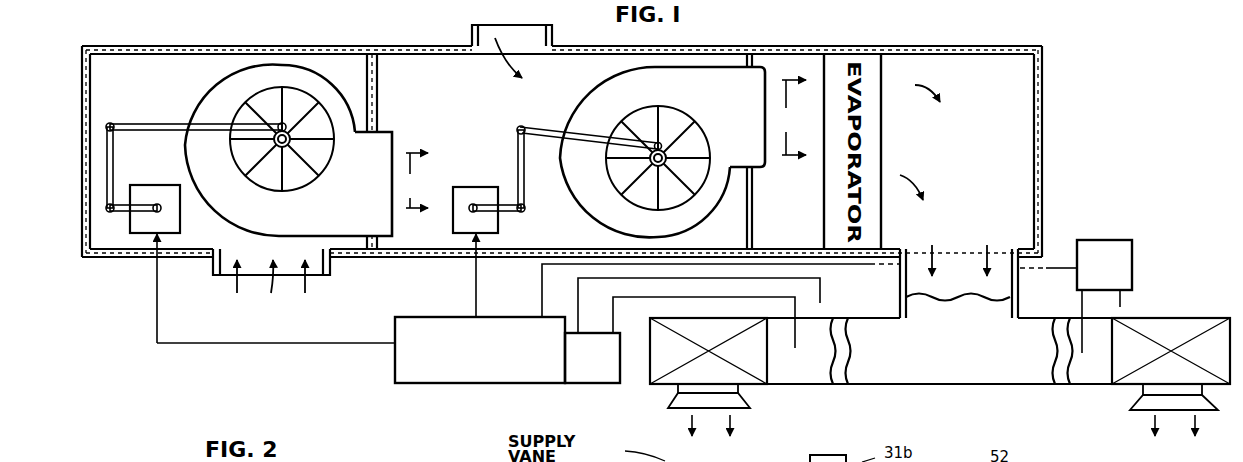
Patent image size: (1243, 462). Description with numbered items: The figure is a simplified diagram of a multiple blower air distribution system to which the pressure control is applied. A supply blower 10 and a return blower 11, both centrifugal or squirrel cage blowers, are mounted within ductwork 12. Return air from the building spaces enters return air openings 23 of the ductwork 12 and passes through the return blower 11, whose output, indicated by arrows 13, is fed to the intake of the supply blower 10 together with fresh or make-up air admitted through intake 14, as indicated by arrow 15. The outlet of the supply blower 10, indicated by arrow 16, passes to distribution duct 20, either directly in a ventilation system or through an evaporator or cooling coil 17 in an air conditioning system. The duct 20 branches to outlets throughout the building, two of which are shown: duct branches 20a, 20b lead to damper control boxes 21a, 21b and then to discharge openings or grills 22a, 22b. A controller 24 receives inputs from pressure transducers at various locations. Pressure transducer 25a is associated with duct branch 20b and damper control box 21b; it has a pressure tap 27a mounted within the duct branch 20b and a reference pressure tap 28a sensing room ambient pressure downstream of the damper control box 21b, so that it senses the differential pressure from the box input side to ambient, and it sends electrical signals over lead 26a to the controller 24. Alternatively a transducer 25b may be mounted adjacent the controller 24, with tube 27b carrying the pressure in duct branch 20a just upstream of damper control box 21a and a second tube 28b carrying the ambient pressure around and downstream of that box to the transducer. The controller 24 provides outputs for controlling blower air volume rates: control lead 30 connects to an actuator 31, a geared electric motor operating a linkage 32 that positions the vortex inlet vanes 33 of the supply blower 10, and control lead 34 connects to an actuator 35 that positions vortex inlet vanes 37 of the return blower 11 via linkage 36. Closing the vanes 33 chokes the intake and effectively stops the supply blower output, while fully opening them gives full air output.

The supply blower 10 is at (590, 88).
The return blower 11 is at (202, 96).
The ductwork 12 is at (721, 46).
The output of return blower 13 is at (414, 180).
The intake 14 is at (535, 28).
The make-up air flow 15 is at (498, 68).
The outlet of supply blower 16 is at (791, 117).
The evaporator or cooling coil 17 is at (870, 131).
The distribution duct 20 is at (1005, 280).
The duct branch 20a is at (833, 386).
The duct branch 20b is at (1048, 386).
The damper control box 21a is at (670, 384).
The damper control box 21b is at (1140, 377).
The discharge opening or grill 22a is at (752, 408).
The discharge opening or grill 22b is at (1146, 413).
The return air openings 23 is at (272, 284).
The controller 24 is at (475, 385).
The pressure transducer 25a is at (1133, 257).
The pressure transducer 25b is at (586, 385).
The lead 26a is at (540, 279).
The pressure tap 27a is at (1078, 303).
The tube 27b is at (795, 333).
The reference pressure tap 28a is at (1124, 303).
The pressure sensing line 28b is at (822, 291).
The control lead 30 is at (470, 287).
The actuator 31 is at (466, 186).
The linkage 32 is at (523, 127).
The vortex inlet vanes 33 is at (673, 128).
The control lead 34 is at (250, 345).
The actuator 35 is at (157, 197).
The linkage 36 is at (118, 153).
The vortex inlet vanes 37 is at (318, 160).